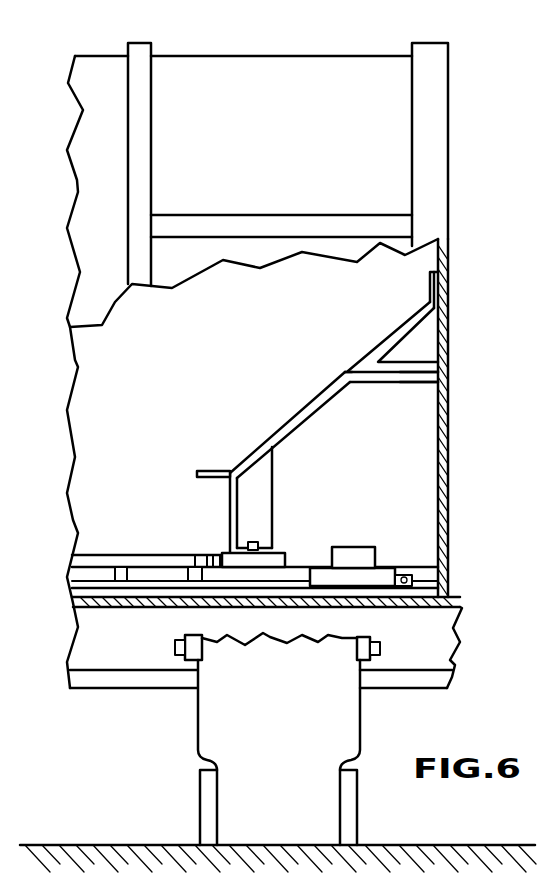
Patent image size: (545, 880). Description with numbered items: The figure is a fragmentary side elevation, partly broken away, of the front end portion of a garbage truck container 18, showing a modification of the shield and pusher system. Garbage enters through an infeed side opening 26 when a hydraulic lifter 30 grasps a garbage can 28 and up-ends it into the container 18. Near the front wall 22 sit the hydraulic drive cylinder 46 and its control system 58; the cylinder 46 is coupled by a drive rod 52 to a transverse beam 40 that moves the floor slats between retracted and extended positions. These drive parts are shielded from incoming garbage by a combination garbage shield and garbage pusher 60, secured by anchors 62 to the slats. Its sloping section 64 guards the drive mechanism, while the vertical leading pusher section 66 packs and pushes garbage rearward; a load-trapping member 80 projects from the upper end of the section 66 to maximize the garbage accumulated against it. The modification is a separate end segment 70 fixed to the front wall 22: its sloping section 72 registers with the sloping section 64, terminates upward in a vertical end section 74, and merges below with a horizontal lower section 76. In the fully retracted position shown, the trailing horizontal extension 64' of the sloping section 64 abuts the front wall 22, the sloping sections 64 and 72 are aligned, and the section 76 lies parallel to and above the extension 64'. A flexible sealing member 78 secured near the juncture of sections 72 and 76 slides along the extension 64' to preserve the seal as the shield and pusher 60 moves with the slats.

The container 18 is at (327, 56).
The infeed side opening 26 is at (274, 86).
The front wall 22 is at (436, 466).
The garbage can 28 is at (197, 720).
The hydraulic lifter 30 is at (175, 650).
The transverse beam 40 is at (122, 567).
The drive rod 52 is at (165, 567).
The hydraulic drive cylinder 46 is at (392, 568).
The control system 58 is at (352, 547).
The combination garbage shield and garbage pusher 60 is at (250, 408).
The anchor 62 is at (257, 542).
The sloping section 64 is at (290, 425).
The horizontal extension 64' is at (391, 407).
The vertical leading pusher section 66 is at (229, 502).
The separate end segment 70 is at (348, 291).
The sloping section 72 is at (405, 330).
The vertical end section 74 is at (430, 287).
The horizontal lower section 76 is at (413, 377).
The flexible sealing member 78 is at (350, 372).
The load-trapping member 80 is at (216, 470).